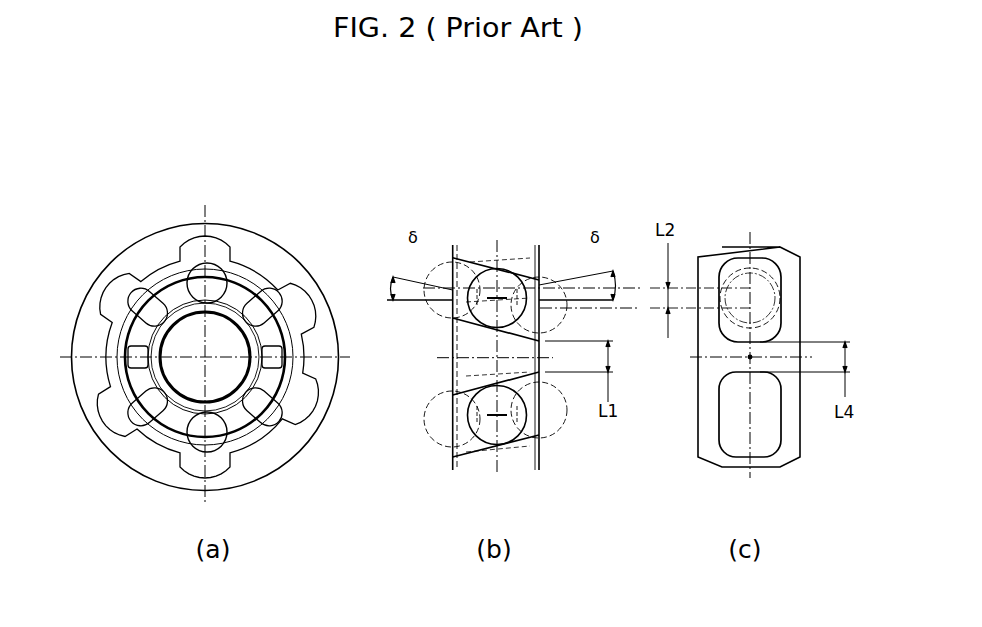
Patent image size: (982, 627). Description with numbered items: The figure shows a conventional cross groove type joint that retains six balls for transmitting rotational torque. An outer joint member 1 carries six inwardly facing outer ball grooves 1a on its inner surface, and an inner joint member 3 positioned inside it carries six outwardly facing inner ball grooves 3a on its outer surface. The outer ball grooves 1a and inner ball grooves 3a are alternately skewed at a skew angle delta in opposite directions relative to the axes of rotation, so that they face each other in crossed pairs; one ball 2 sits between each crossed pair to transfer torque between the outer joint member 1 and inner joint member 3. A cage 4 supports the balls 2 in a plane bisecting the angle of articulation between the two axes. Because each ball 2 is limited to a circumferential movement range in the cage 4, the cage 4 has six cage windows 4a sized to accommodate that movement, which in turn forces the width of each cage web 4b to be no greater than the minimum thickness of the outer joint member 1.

The outer joint member 1 is at (188, 227).
The outer ball grooves 1a is at (150, 268).
The balls 2 is at (218, 242).
The inner joint member 3 is at (258, 284).
The inner ball grooves 3a is at (240, 258).
The cage 4 is at (290, 372).
The cage windows 4a is at (758, 425).
The cage web 4b is at (756, 352).